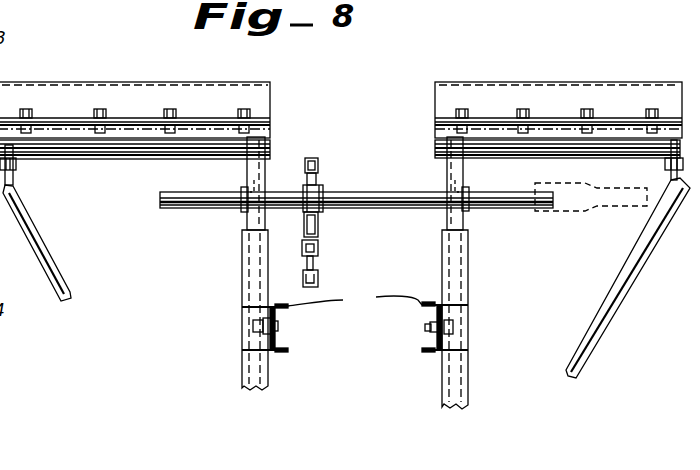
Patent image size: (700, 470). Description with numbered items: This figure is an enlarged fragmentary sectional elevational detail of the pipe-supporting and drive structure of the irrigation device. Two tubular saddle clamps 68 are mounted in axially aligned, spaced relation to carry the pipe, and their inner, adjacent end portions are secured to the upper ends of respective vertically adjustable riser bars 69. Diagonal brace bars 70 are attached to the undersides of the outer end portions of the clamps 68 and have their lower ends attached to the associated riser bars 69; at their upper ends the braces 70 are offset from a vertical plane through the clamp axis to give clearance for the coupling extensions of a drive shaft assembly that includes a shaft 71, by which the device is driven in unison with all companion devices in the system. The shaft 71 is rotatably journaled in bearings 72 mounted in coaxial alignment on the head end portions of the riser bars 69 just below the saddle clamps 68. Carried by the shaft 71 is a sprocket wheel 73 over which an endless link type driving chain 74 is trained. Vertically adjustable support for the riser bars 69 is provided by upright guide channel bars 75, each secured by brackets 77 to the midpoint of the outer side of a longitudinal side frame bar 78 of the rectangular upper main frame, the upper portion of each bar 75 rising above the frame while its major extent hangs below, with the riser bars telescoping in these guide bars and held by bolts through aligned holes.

The tubular saddle clamp 68 is at (97, 158).
The vertically adjustable riser bar 69 is at (250, 166).
The diagonal brace bar 70 is at (60, 293).
The shaft 71 is at (373, 207).
The bearing 72 is at (243, 207).
The sprocket wheel 73 is at (318, 179).
The endless driving chain 74 is at (318, 255).
The guide channel bar 75 is at (243, 283).
The bracket 77 is at (243, 319).
The longitudinal side frame bar 78 is at (355, 299).